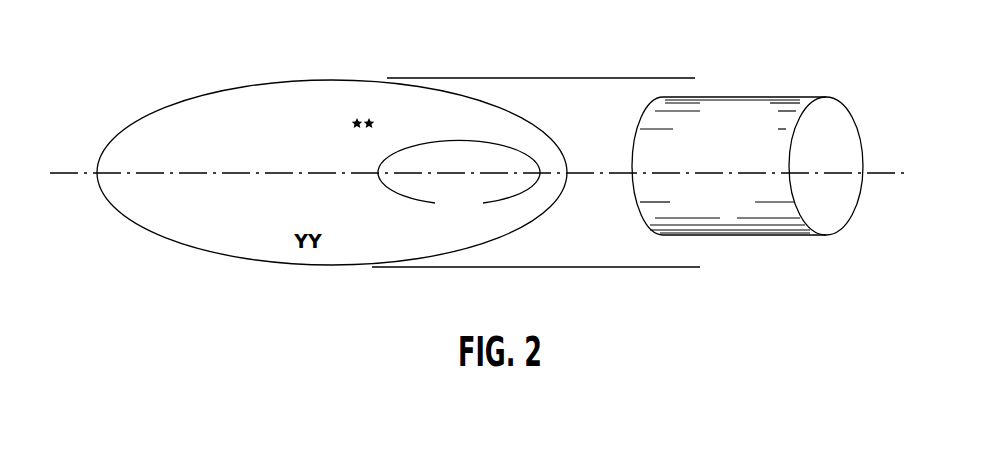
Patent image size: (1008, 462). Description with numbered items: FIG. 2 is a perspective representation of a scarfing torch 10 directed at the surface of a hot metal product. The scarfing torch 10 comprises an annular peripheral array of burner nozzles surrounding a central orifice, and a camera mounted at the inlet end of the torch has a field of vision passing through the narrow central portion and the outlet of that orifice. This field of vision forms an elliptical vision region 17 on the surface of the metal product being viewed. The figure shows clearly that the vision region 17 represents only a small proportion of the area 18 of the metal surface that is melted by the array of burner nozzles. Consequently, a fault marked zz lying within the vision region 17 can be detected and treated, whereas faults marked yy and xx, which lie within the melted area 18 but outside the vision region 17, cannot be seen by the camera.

The scarfing torch 10 is at (758, 91).
The elliptical vision region 17 is at (518, 168).
The area of the metal surface melted by the burner nozzles 18 is at (190, 210).